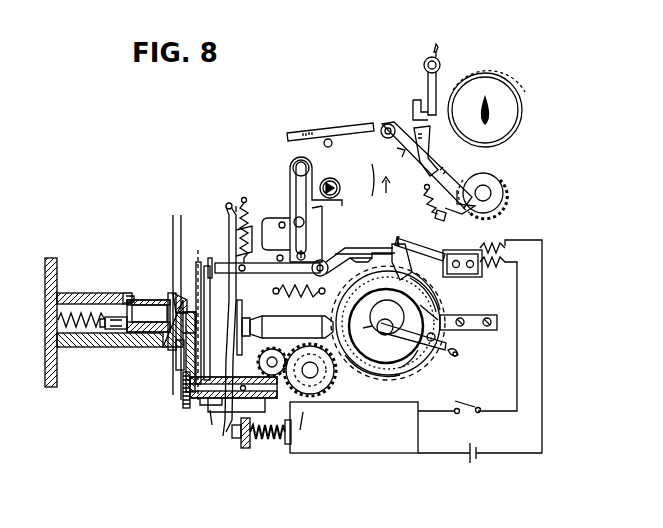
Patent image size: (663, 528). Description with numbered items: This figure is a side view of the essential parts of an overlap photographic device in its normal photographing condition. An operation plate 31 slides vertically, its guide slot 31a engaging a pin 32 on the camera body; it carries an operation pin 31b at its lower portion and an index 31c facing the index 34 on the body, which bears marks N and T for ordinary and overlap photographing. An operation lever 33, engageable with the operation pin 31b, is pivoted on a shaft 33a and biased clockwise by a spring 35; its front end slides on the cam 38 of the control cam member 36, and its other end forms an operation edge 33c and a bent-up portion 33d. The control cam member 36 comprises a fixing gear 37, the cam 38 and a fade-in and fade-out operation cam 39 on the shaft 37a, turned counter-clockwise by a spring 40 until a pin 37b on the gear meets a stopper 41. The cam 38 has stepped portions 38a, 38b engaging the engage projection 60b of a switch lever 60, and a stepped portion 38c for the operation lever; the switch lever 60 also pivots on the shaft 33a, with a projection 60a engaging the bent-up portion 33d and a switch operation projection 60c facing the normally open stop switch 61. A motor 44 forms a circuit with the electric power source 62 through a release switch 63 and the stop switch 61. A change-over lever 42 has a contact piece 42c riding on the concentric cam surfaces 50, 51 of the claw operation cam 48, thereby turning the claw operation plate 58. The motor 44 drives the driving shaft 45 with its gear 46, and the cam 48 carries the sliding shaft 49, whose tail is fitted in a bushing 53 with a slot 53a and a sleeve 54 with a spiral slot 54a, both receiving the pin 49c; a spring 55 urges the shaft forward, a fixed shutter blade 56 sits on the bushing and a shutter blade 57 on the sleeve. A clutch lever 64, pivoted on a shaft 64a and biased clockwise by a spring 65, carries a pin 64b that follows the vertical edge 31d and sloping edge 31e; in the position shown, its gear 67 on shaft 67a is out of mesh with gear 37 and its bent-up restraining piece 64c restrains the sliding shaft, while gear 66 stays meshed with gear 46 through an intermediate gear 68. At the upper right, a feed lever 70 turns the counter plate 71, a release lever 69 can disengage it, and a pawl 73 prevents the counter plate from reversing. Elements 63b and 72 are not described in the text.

The operation plate 31 is at (312, 210).
The guide slot 31a is at (293, 165).
The operation pin 31b is at (272, 218).
The index 31c is at (330, 178).
The vertical edge 31d is at (296, 185).
The sloping edge 31e is at (236, 206).
The pin 32 is at (322, 208).
The operation lever 33 is at (232, 263).
The shaft 33a is at (322, 260).
The operation edge 33c is at (209, 258).
The bent-up portion 33d is at (356, 264).
The index 34 is at (371, 179).
The spring 35 is at (243, 203).
The control cam member 36 is at (384, 335).
The fixing gear 37 is at (440, 355).
The shaft 37a is at (390, 315).
The pin 37b is at (437, 339).
The cam 38 is at (425, 360).
The stepped portion 38a is at (395, 374).
The stepped portion 38b is at (430, 306).
The stepped portion 38c is at (362, 325).
The fade-in and fade-out operation cam 39 is at (420, 360).
The spring 40 is at (460, 356).
The stopper 41 is at (489, 315).
The change-over lever 42 is at (222, 290).
The contact piece 42c is at (212, 425).
The motor 44 is at (403, 453).
The driving shaft 45 is at (188, 408).
The gear 46 is at (266, 440).
The claw operation cam 48 is at (178, 345).
The sliding shaft 49 is at (170, 293).
The pin 49c is at (126, 296).
The cam surface 50 is at (200, 270).
The cam surface 51 is at (188, 370).
The bushing 53 is at (110, 329).
The slot 53a is at (150, 300).
The sleeve 54 is at (75, 293).
The spiral slot 54a is at (131, 296).
The spring 55 is at (70, 347).
The fixed shutter blade 56 is at (181, 215).
The shutter blade 57 is at (173, 230).
The claw operation plate 58 is at (240, 448).
The switch lever 60 is at (386, 246).
The projection 60a is at (363, 254).
The engage projection 60b is at (426, 292).
The switch operation projection 60c is at (447, 266).
The stop switch 61 is at (436, 250).
The electric power source 62 is at (476, 460).
The release switch 63 is at (463, 414).
The spring 63b is at (426, 192).
The clutch lever 64 is at (229, 203).
The shaft 64a is at (303, 412).
The pin 64b is at (252, 226).
The bent-up restraining piece 64c is at (223, 436).
The spring 65 is at (299, 289).
The gear 66 is at (287, 327).
The gear 67 is at (318, 372).
The shaft 67a is at (285, 370).
The intermediate gear 68 is at (288, 444).
The release lever 69 is at (337, 127).
The feed lever 70 is at (458, 172).
The counter plate 71 is at (514, 86).
The gear 72 is at (505, 190).
The pawl 73 is at (428, 90).